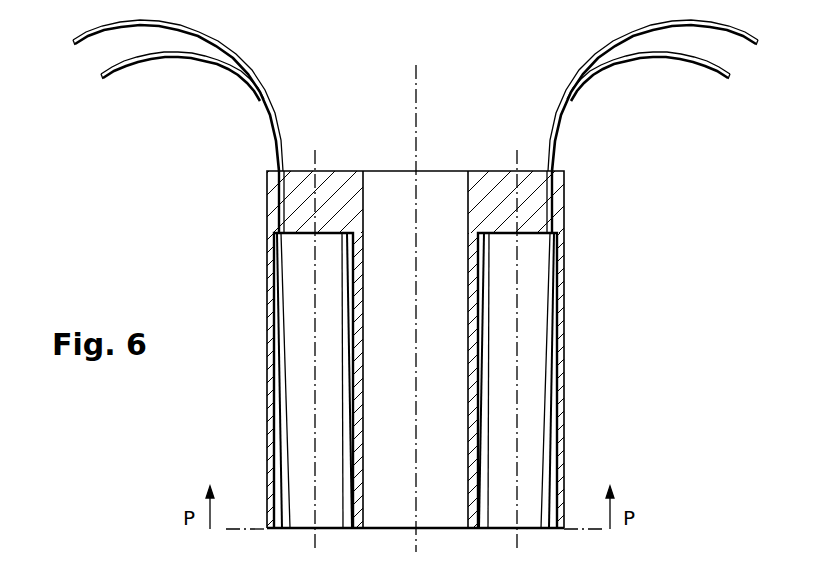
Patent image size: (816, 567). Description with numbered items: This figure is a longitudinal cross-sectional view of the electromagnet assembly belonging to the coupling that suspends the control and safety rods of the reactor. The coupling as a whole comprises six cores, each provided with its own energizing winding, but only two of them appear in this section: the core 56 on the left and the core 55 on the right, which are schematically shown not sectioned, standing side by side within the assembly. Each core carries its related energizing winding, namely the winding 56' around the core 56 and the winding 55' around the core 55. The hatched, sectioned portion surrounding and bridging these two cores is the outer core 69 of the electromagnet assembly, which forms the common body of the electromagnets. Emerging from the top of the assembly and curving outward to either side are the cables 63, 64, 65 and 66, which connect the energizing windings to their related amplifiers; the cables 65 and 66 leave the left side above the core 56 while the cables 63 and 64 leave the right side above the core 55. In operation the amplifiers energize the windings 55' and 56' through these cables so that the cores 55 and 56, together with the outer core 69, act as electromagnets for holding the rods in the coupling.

The core 55 is at (552, 349).
The energizing winding 55' is at (566, 380).
The core 56 is at (276, 349).
The energizing winding 56' is at (266, 380).
The cable 63 is at (749, 43).
The cable 64 is at (709, 64).
The cable 65 is at (146, 63).
The cable 66 is at (87, 43).
The outer core 69 is at (300, 195).